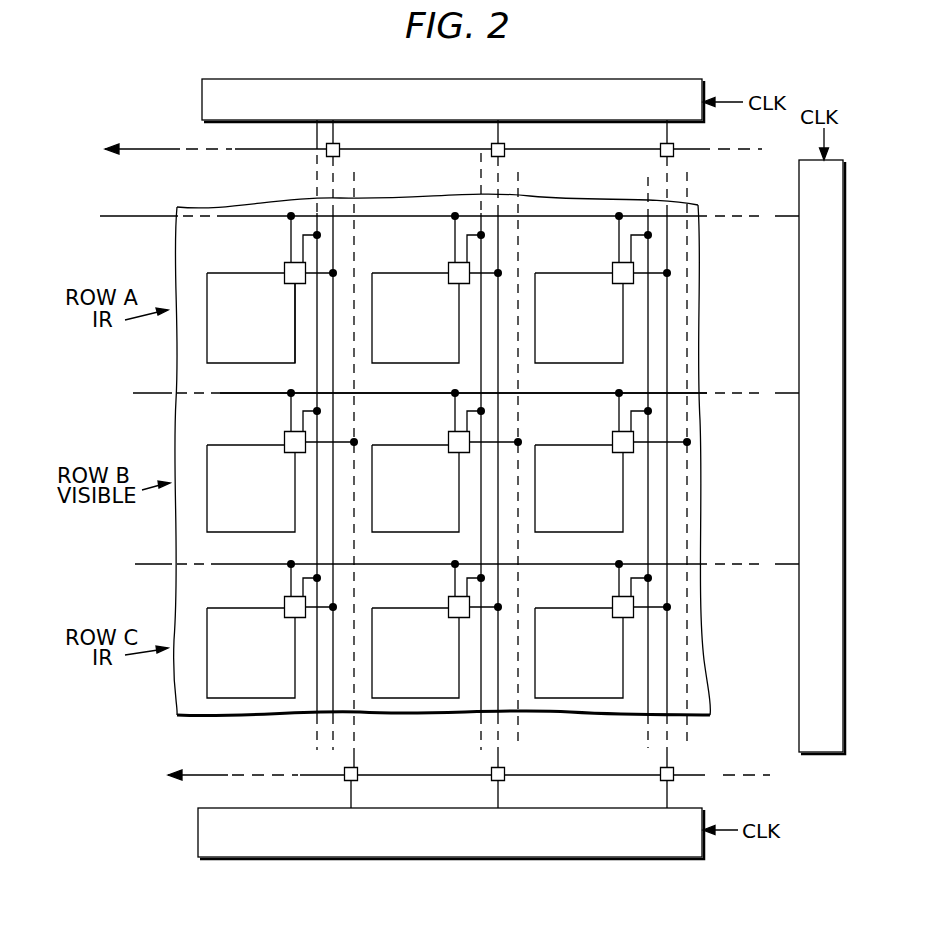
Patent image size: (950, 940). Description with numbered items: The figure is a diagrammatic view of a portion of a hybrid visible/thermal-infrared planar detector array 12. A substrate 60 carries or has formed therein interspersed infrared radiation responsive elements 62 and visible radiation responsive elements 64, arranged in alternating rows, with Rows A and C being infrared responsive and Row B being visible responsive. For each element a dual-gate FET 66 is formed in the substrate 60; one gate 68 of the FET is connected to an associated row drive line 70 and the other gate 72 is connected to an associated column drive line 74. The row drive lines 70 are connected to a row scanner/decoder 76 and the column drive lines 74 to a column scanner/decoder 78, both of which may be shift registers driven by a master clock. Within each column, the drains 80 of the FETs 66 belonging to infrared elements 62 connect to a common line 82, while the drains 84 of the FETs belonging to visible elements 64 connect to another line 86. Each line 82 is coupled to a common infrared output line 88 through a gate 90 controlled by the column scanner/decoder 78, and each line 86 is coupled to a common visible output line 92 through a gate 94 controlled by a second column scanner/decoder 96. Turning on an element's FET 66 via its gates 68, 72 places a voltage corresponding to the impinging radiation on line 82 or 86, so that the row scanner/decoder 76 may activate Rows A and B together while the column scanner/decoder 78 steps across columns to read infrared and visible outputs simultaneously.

The hybrid visible/thermal-infrared planar detector array 12 is at (770, 140).
The substrate 60 is at (245, 712).
The infrared radiation responsive elements 62 is at (432, 272).
The visible radiation responsive elements 64 is at (210, 446).
The dual-gate FET 66 is at (284, 270).
The gate 68 is at (288, 231).
The row drive line 70 is at (240, 214).
The gate 72 is at (302, 238).
The column drive line 74 is at (300, 365).
The row scanner/decoder 76 is at (798, 692).
The column scanner/decoder 78 is at (658, 78).
The drain 80 is at (335, 272).
The common line 82 is at (345, 393).
The drain 84 is at (505, 443).
The line 86 is at (505, 452).
The common infrared output line 88 is at (145, 148).
The gate 90 is at (340, 148).
The common visible output line 92 is at (228, 774).
The gate 94 is at (358, 771).
The column scanner/decoder 96 is at (198, 850).